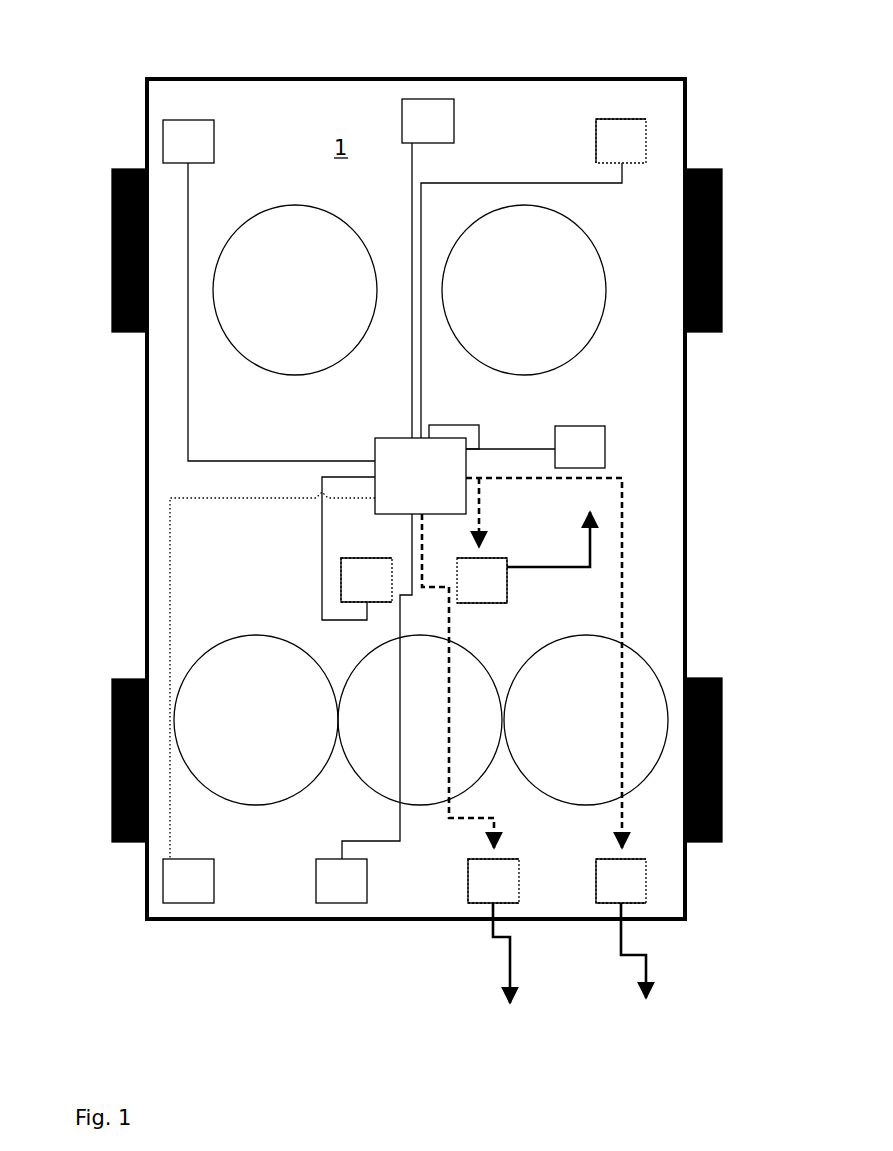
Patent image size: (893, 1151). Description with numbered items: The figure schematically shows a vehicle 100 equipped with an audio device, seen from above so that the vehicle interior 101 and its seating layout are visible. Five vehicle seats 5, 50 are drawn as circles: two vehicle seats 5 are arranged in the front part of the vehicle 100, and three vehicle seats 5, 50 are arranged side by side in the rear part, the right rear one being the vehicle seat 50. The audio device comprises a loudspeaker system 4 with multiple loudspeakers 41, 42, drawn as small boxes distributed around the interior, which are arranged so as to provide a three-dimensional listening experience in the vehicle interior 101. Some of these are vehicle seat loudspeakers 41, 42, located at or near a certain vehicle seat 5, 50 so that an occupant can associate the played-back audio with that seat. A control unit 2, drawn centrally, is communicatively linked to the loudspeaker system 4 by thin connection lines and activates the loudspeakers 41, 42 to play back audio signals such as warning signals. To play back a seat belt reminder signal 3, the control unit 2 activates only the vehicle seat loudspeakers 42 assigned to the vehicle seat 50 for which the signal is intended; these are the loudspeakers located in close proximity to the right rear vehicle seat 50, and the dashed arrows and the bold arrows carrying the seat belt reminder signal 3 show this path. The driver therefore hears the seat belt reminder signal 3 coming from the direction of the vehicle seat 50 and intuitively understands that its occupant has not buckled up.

The control unit 2 is at (466, 450).
The seat belt reminder signal 3 is at (590, 545).
The sensor 4 is at (417, 99).
The vehicle seat 5 is at (282, 375).
The vehicle seat loudspeaker 41 is at (188, 120).
The vehicle seat loudspeaker 42 is at (507, 573).
The right rear vehicle seat 50 is at (658, 677).
The vehicle 100 is at (685, 500).
The vehicle interior 101 is at (266, 106).